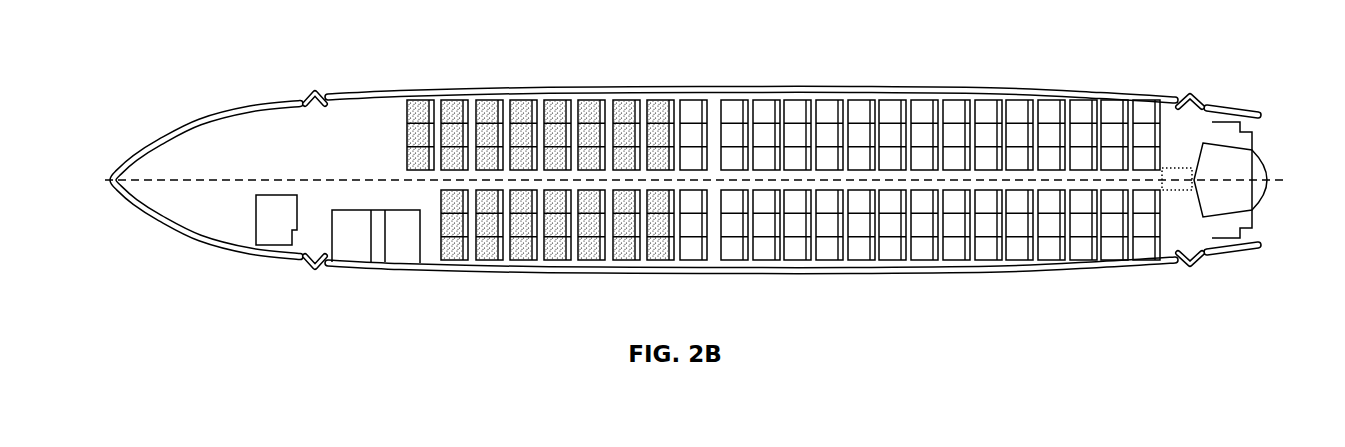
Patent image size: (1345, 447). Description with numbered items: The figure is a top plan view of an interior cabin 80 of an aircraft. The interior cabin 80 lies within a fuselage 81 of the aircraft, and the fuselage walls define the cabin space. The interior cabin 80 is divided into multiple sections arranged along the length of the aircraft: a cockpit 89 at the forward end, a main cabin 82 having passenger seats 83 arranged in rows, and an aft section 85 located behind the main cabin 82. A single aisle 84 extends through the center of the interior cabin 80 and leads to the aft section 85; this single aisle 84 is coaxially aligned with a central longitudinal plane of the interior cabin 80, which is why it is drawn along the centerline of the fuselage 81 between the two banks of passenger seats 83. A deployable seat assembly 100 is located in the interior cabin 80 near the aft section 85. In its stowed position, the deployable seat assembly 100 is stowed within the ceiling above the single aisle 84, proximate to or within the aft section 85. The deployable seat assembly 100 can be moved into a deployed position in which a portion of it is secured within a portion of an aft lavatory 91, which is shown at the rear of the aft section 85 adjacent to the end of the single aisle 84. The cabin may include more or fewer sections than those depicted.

The interior cabin 80 is at (331, 40).
The fuselage 81 is at (508, 92).
The main cabin 82 is at (455, 110).
The passenger seats 83 is at (693, 117).
The single aisle 84 is at (800, 175).
The aft section 85 is at (1177, 120).
The cockpit 89 is at (218, 140).
The aft lavatory 91 is at (1242, 167).
The deployable seat assembly 100 is at (1180, 175).